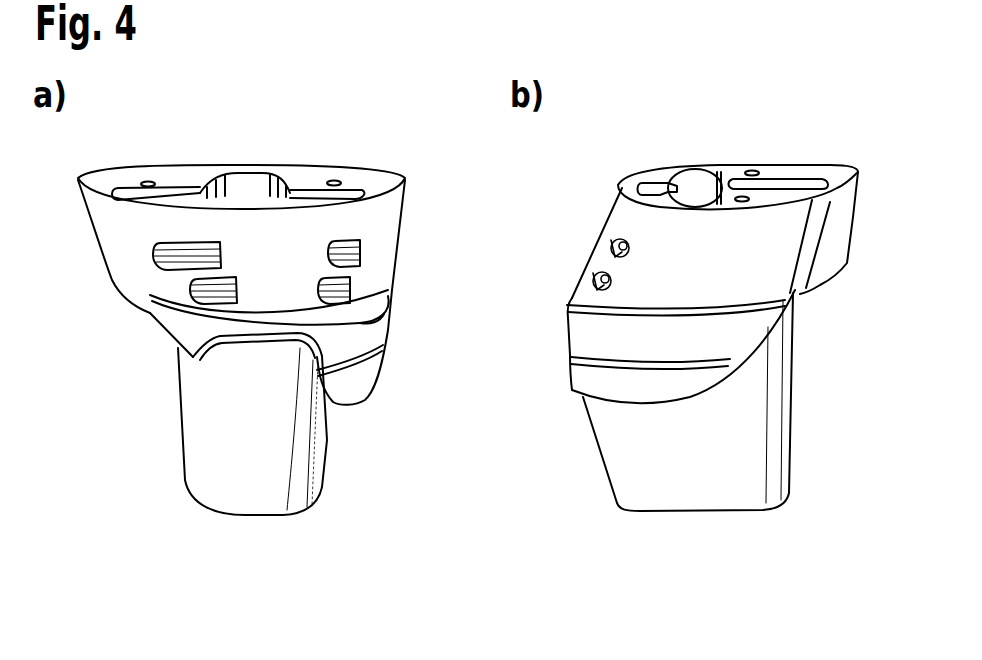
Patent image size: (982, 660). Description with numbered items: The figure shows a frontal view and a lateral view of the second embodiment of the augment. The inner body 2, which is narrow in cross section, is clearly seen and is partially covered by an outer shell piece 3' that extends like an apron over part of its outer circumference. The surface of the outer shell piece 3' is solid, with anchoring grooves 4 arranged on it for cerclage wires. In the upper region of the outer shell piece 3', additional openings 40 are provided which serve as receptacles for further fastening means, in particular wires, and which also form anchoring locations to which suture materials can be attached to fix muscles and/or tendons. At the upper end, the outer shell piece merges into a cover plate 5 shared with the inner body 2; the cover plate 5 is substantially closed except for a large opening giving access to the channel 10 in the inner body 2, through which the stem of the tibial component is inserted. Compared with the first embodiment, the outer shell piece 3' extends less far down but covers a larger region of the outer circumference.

The inner body 2 is at (203, 440).
The outer shell piece 3' is at (458, 437).
The anchoring grooves 4 is at (385, 356).
The cover plate 5 is at (823, 217).
The channel 10 is at (703, 185).
The additional openings 40 is at (190, 290).